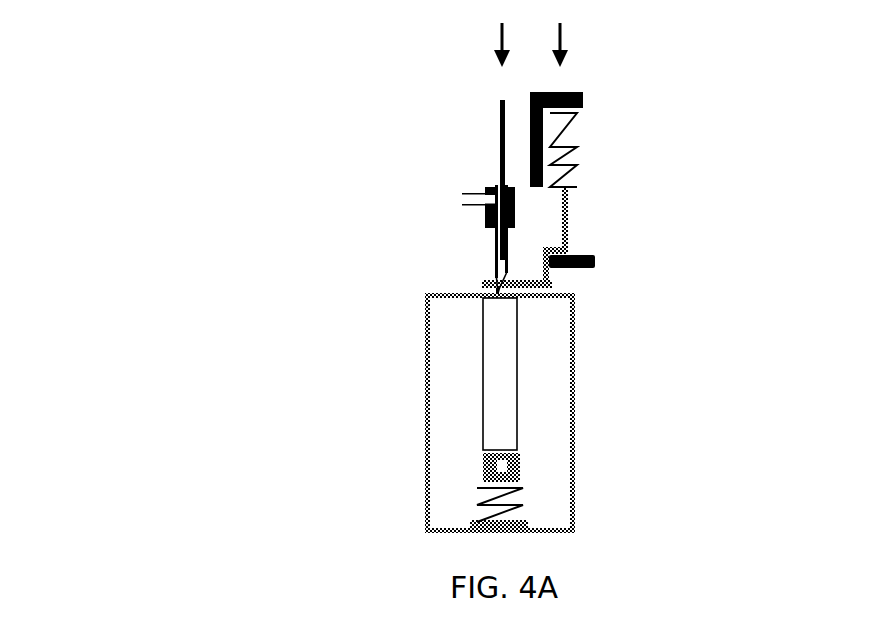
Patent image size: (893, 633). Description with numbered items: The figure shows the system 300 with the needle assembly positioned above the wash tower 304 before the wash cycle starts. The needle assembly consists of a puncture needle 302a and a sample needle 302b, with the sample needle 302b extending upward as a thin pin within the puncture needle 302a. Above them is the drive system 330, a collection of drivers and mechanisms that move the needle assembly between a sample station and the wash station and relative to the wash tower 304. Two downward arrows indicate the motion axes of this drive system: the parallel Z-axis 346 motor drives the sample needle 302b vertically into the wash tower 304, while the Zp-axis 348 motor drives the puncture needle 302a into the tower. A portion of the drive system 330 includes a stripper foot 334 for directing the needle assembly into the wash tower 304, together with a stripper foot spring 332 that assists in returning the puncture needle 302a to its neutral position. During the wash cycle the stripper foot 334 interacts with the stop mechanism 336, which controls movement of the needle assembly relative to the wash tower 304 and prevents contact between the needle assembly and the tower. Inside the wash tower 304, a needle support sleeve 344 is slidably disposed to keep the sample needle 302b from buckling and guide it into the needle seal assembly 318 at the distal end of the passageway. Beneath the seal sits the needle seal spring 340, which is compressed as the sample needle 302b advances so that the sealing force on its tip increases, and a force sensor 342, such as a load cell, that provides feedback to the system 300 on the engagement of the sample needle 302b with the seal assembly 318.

The system 300 is at (174, 148).
The puncture needle 302a is at (489, 249).
The sample needle 302b is at (492, 123).
The wash tower 304 is at (424, 329).
The needle seal assembly 318 is at (480, 465).
The drive system 330 is at (600, 102).
The stripper foot spring 332 is at (583, 150).
The stripper foot 334 is at (577, 215).
The stop mechanism 336 is at (601, 266).
The needle seal spring 340 is at (472, 501).
The force sensor 342 is at (530, 523).
The needle support sleeve 344 is at (480, 379).
The Z-axis 346 is at (490, 38).
The Zp-axis 348 is at (576, 36).